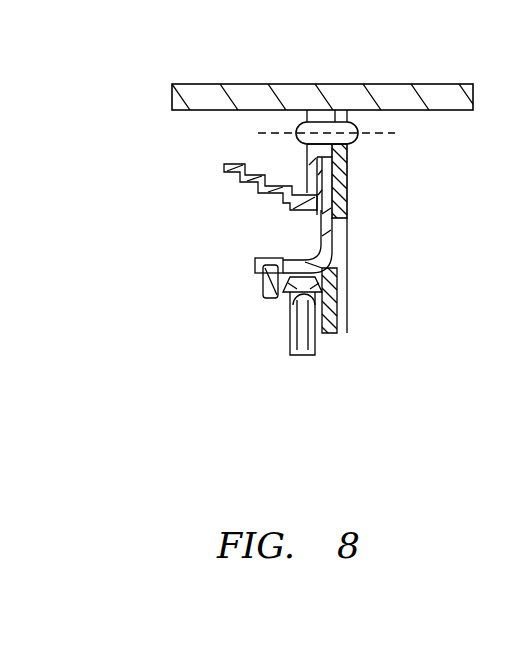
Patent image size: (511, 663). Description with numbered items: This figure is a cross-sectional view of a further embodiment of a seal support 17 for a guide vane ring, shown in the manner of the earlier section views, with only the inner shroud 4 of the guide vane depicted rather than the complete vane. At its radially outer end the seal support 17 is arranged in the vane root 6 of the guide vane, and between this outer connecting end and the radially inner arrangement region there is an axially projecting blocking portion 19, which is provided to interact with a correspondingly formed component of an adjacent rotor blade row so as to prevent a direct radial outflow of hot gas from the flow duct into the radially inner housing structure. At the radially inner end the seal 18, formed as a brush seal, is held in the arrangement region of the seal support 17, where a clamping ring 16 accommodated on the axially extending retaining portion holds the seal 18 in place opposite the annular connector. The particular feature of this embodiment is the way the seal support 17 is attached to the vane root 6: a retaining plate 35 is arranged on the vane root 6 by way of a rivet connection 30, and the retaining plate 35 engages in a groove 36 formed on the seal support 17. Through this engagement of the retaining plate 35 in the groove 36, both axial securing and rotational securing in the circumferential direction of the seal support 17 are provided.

The inner shroud 4 is at (347, 98).
The vane root 6 is at (315, 163).
The clamping ring 16 is at (262, 287).
The seal support 17 is at (343, 270).
The seal 18 is at (298, 338).
The blocking portion 19 is at (240, 182).
The rivet connection 30 is at (352, 138).
The retaining plate 35 is at (348, 176).
The groove 36 is at (340, 228).